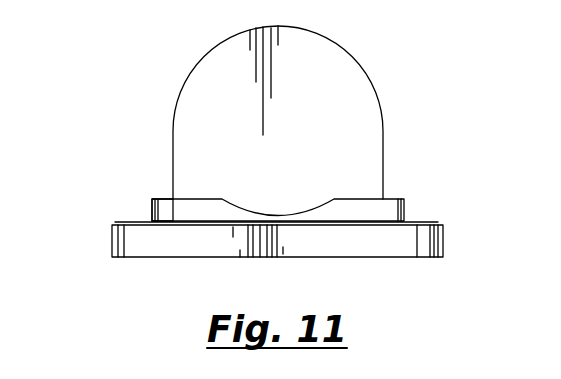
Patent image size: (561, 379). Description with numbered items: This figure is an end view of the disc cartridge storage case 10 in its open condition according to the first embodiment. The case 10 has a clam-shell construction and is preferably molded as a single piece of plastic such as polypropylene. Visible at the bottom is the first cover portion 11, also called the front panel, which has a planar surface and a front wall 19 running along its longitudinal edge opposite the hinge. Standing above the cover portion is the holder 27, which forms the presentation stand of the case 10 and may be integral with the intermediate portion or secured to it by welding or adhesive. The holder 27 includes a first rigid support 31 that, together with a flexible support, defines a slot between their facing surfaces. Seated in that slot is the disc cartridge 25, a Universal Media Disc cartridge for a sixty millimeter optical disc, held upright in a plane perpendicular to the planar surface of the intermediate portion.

The disc cartridge storage case 10 is at (150, 98).
The first cover portion 11 is at (430, 246).
The front wall 19 is at (213, 245).
The disc cartridge 25 is at (345, 82).
The holder 27 is at (378, 212).
The first rigid support 31 is at (172, 205).